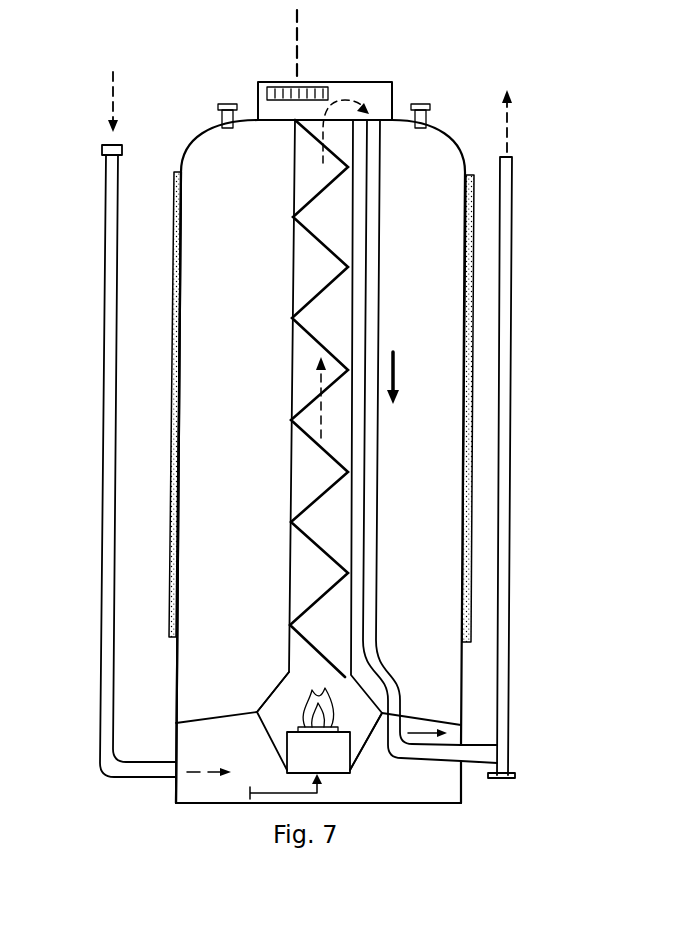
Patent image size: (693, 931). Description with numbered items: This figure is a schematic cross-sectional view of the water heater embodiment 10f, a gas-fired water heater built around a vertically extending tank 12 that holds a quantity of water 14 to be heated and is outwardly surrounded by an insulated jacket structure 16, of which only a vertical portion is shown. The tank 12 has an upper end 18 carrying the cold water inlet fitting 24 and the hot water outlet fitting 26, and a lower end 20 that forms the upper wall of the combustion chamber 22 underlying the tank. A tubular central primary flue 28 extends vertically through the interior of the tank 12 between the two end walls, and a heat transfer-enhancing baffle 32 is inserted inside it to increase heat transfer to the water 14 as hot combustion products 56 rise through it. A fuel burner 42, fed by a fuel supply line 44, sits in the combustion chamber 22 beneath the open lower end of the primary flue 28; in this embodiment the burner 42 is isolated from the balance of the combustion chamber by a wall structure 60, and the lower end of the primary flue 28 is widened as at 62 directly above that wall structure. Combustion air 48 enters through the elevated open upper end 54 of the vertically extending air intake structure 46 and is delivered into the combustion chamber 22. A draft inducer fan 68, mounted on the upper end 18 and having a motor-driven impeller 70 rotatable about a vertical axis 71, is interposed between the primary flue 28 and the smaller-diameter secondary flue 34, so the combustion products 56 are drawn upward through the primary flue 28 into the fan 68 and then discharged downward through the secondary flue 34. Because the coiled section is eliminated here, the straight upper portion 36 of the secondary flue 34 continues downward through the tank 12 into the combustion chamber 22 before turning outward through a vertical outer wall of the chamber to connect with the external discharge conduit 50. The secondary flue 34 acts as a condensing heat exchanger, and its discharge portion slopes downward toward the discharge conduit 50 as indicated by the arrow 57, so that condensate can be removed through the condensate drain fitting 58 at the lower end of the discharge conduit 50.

The water heater embodiment 10f is at (205, 70).
The tank 12 is at (172, 676).
The water 14 is at (250, 545).
The insulated jacket structure 16 is at (170, 470).
The upper end 18 is at (211, 131).
The lower end 20 is at (178, 726).
The combustion chamber 22 is at (446, 798).
The cold water inlet fitting 24 is at (219, 118).
The hot water outlet fitting 26 is at (427, 105).
The primary flue 28 is at (292, 271).
The heat transfer-enhancing baffle 32 is at (322, 190).
The secondary flue 34 is at (381, 506).
The straight upper portion 36 is at (381, 276).
The fuel burner 42 is at (331, 767).
The fuel supply line 44 is at (266, 790).
The air intake structure 46 is at (146, 779).
The combustion air 48 is at (109, 85).
The discharge conduit 50 is at (513, 412).
The elevated open upper end 54 is at (102, 151).
The combustion products 56 is at (511, 129).
The arrow 57 is at (421, 721).
The condensate drain fitting 58 is at (500, 781).
The wall structure 60 is at (364, 740).
The widened bottom end portion 62 is at (275, 688).
The draft inducer fan 68 is at (379, 82).
The motor-driven impeller 70 is at (277, 88).
The vertical axis 71 is at (294, 42).